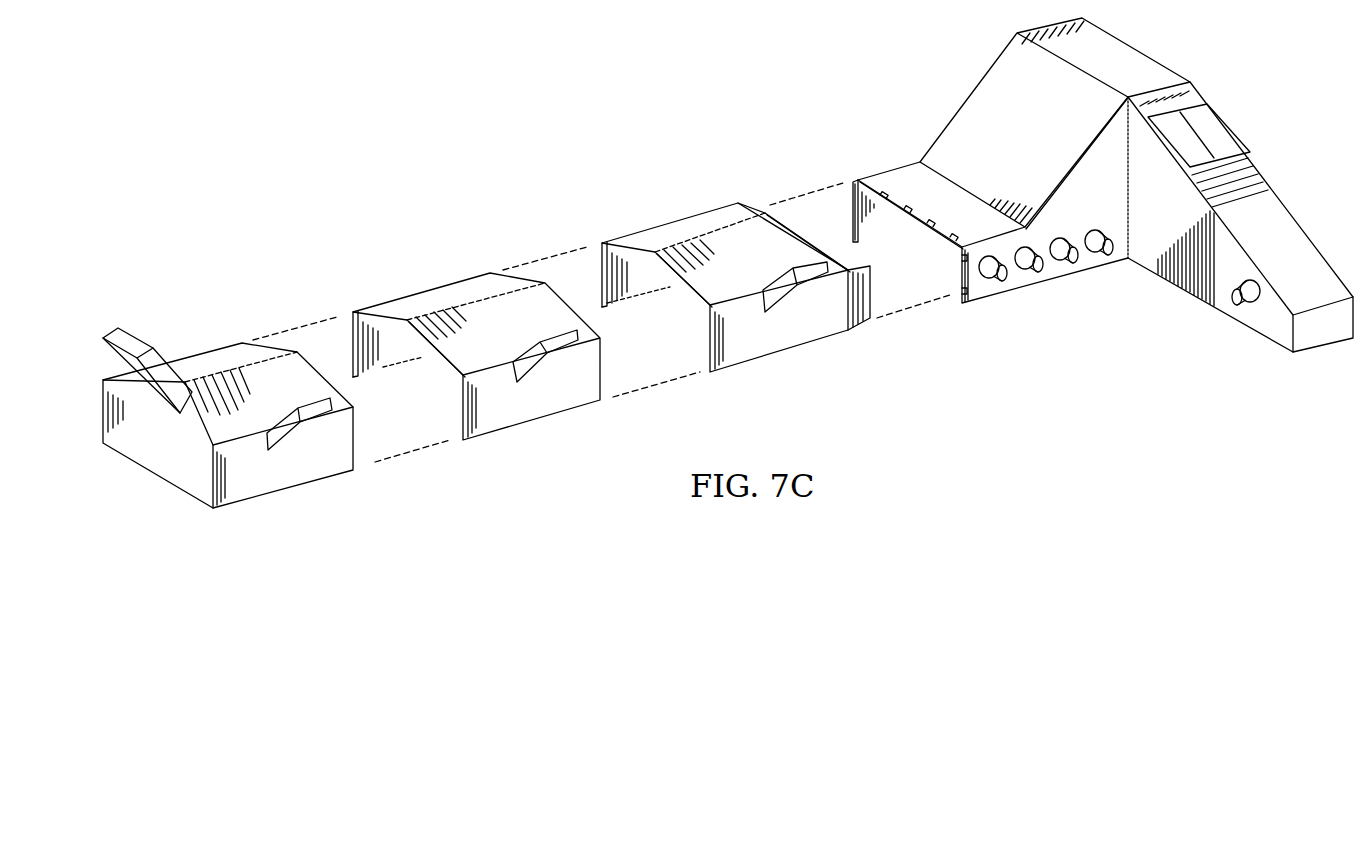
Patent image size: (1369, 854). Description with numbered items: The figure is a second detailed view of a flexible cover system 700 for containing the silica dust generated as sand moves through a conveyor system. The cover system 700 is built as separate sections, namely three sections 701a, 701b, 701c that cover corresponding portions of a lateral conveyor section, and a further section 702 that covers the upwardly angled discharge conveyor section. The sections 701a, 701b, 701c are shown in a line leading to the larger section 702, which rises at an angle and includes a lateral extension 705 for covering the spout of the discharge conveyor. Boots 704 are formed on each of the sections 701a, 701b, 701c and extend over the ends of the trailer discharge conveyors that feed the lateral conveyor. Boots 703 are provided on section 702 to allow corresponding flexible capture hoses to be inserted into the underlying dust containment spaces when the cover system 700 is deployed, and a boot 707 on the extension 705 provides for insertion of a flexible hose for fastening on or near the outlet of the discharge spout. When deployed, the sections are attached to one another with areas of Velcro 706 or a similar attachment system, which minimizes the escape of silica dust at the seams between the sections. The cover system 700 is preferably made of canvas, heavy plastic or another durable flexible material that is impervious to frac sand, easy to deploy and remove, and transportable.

The flexible cover system 700 is at (458, 88).
The cover section 701a is at (216, 362).
The cover section 701b is at (432, 298).
The cover section 701c is at (682, 232).
The cover section 702 is at (1045, 146).
The boots 703 is at (1022, 278).
The boots 704 is at (132, 327).
The lateral extension 705 is at (1300, 223).
The Velcro areas 706 is at (861, 181).
The boot 707 is at (1245, 305).